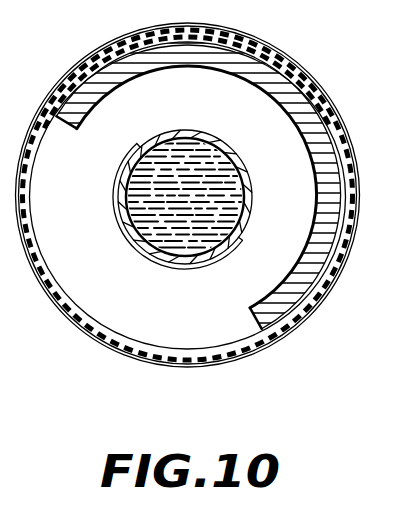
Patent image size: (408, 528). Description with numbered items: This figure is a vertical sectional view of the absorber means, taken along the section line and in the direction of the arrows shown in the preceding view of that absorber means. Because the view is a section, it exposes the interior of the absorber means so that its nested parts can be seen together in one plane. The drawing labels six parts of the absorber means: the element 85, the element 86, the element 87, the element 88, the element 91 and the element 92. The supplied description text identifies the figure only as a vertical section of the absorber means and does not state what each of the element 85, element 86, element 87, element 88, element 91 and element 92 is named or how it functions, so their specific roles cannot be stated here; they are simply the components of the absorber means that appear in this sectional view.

The inner tubular member 85 is at (250, 200).
The arcuate insulating segment 86 is at (301, 110).
The outer shell 87 is at (90, 340).
The lining of outer shell 88 is at (72, 310).
The end of arcuate segment 91 is at (50, 117).
The filler material 92 is at (188, 190).